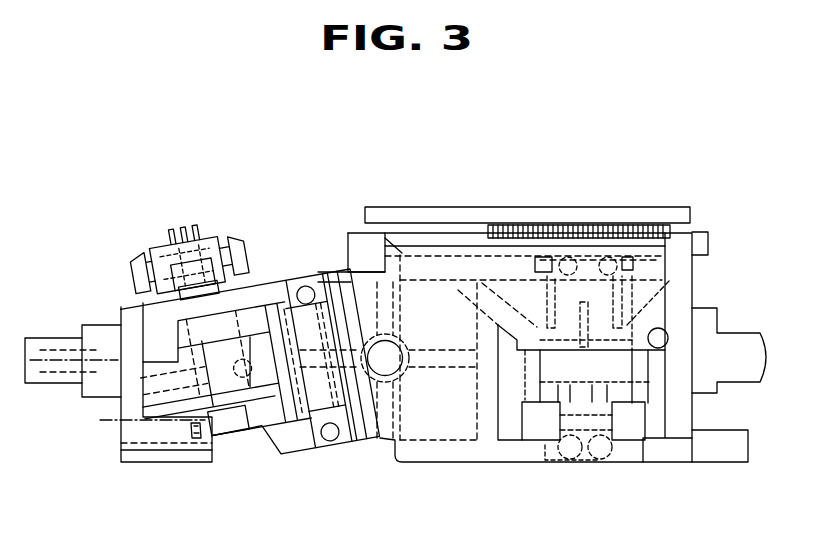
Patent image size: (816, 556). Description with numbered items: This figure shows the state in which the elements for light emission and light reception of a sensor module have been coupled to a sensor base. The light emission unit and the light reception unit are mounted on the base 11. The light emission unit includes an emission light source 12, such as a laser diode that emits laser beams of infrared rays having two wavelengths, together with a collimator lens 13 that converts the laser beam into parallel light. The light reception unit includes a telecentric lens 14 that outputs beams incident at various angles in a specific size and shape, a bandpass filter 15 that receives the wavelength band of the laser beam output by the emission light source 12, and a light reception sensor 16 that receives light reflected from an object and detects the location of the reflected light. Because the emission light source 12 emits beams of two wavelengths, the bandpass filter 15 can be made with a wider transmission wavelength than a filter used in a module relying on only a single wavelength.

The base 11 is at (368, 292).
The emission light source 12 is at (182, 210).
The collimator lens 13 is at (181, 443).
The telecentric lens 14 is at (527, 441).
The bandpass filter 15 is at (652, 260).
The light reception sensor 16 is at (497, 196).